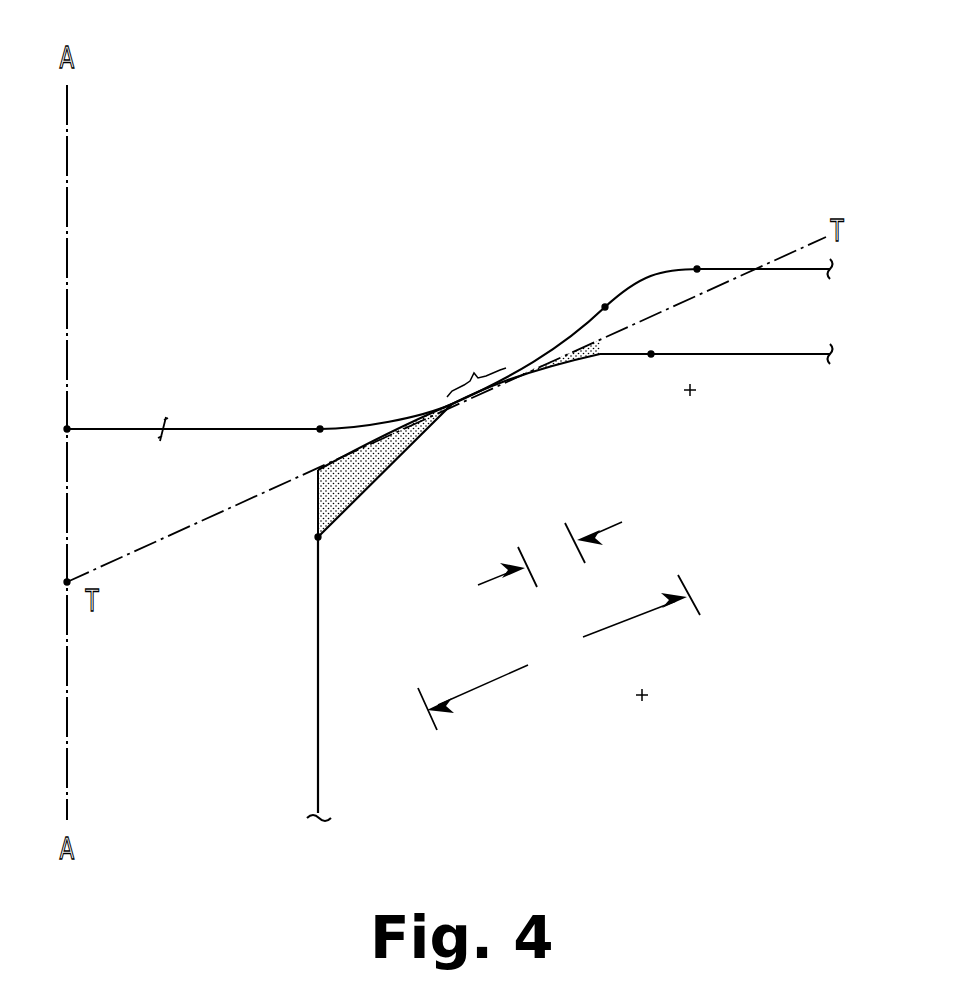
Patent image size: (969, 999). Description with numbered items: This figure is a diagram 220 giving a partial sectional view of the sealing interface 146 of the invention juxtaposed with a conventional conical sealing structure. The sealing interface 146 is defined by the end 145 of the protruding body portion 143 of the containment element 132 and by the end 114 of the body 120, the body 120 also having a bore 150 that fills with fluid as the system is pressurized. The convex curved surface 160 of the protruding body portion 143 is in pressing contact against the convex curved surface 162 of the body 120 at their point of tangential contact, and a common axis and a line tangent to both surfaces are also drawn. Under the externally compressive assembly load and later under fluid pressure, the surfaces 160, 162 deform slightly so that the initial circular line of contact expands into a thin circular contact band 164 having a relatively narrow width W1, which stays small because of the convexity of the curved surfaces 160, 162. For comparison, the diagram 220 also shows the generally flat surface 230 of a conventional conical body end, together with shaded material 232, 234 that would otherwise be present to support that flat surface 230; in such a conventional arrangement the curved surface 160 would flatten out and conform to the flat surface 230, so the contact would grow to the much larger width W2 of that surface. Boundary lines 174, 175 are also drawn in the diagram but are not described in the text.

The end of body 114 is at (729, 323).
The body 120 is at (767, 517).
The containment element 132 is at (638, 96).
The protruding body portion 143 is at (455, 237).
The end of protruding body portion 145 is at (193, 385).
The sealing interface 146 is at (356, 293).
The bore 150 is at (229, 701).
The first convex curved surface 160 is at (576, 339).
The second convex curved surface 162 is at (466, 447).
The contact band 164 is at (475, 365).
The vertical boundary line 174 is at (364, 679).
The horizontal boundary line 175 is at (784, 400).
The diagram 220 is at (522, 72).
The generally flat surface 230 is at (322, 470).
The material 232 is at (275, 534).
The material 234 is at (526, 404).
The width of contact band W1 is at (550, 567).
The width of generally flat surface W2 is at (559, 652).